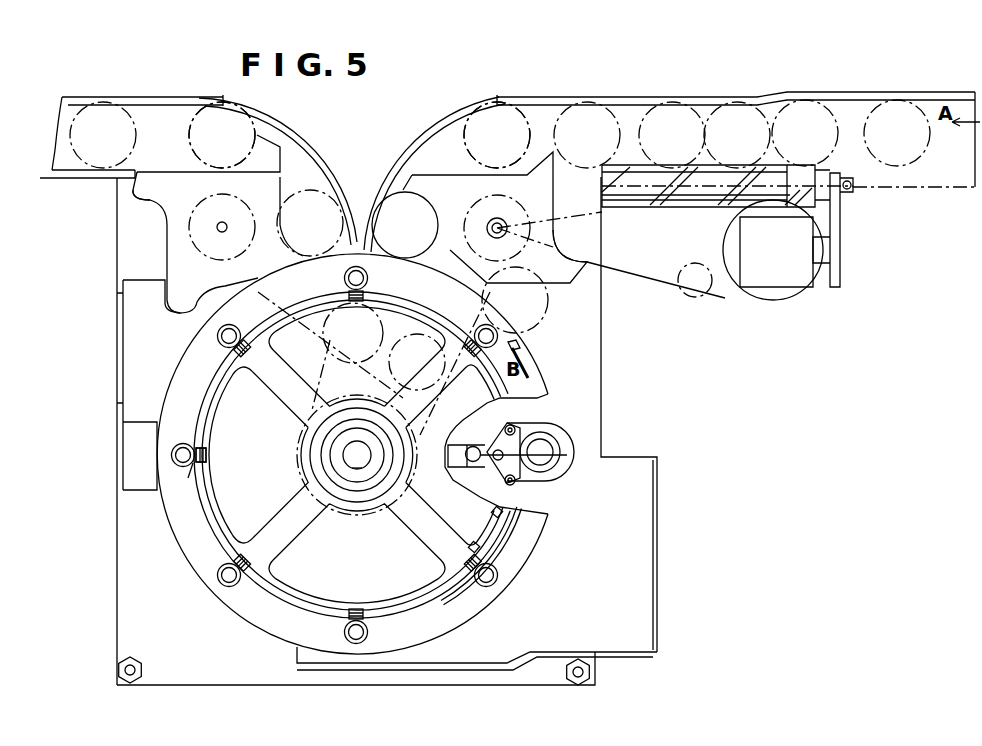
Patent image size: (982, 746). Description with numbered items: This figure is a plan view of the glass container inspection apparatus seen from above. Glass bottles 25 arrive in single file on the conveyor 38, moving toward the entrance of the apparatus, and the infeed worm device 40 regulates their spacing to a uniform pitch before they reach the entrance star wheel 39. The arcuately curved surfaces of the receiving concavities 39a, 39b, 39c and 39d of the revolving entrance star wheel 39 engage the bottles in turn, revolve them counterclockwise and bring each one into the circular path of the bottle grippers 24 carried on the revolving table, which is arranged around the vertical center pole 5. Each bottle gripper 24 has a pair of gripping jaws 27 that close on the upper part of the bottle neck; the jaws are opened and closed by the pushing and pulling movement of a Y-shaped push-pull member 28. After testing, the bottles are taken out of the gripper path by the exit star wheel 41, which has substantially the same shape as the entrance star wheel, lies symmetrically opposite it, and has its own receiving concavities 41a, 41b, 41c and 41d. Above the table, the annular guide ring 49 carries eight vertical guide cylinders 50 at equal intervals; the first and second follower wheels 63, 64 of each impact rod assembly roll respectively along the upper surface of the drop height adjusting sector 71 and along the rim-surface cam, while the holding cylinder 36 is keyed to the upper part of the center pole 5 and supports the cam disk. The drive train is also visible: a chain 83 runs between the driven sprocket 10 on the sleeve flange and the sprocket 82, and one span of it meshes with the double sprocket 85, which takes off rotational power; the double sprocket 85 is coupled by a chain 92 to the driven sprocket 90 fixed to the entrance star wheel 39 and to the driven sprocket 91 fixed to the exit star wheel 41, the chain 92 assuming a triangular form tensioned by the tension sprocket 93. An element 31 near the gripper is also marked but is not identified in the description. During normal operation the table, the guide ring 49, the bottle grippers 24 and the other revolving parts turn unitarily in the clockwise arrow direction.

The center pole 5 is at (346, 458).
The driven sprocket 10 is at (357, 514).
The bottle gripper 24 is at (530, 460).
The glass bottle 25 is at (600, 107).
The gripping jaws 27 is at (553, 433).
The Y-shaped push-pull member 28 is at (457, 447).
The lever 31 is at (472, 465).
The holding cylinder 36 is at (346, 476).
The conveyor 38 is at (848, 105).
The entrance star wheel 39 is at (434, 179).
The receiving concavity 39a is at (514, 168).
The receiving concavity 39b is at (556, 226).
The receiving concavity 39c is at (493, 297).
The receiving concavity 39d is at (420, 197).
The infeed worm device 40 is at (700, 193).
The exit star wheel 41 is at (174, 176).
The receiving concavity 41a is at (190, 307).
The receiving concavity 41b is at (146, 200).
The receiving concavity 41c is at (237, 165).
The receiving concavity 41d is at (300, 253).
The annular guide ring 49 is at (465, 607).
The guide cylinder 50 is at (372, 277).
The first follower wheel 63 is at (206, 450).
The second follower wheel 64 is at (188, 478).
The drop height adjusting sector 71 is at (458, 571).
The sprocket 82 is at (382, 352).
The chain 83 is at (316, 368).
The double sprocket 85 is at (417, 338).
The driven sprocket 90 is at (508, 204).
The driven sprocket 91 is at (199, 207).
The chain 92 is at (285, 300).
The tension sprocket 93 is at (540, 326).